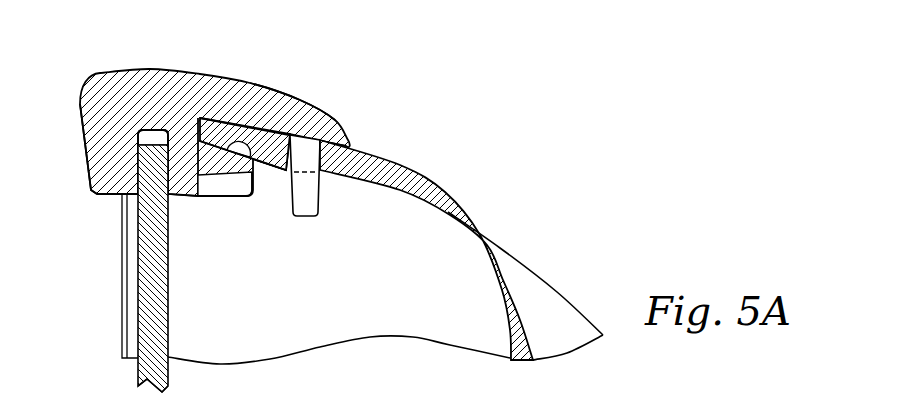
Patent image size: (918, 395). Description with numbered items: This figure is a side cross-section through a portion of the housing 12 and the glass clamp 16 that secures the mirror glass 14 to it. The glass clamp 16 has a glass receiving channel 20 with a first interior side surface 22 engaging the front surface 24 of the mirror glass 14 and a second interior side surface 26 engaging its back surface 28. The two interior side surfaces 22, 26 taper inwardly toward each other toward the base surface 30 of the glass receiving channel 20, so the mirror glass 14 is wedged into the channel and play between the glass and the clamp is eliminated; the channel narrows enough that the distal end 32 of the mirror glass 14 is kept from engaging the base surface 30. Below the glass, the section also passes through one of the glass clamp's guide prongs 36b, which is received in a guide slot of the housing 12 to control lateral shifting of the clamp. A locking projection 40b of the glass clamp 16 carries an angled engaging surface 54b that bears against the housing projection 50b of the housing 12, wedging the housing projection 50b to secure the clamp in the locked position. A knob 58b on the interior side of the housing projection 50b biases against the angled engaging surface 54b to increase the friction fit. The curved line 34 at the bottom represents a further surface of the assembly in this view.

The housing 12 is at (557, 290).
The mirror glass 14 is at (152, 366).
The glass clamp 16 is at (263, 90).
The glass receiving channel 20 is at (155, 137).
The first interior side surface 22 is at (110, 196).
The front surface 24 is at (142, 288).
The second interior side surface 26 is at (176, 194).
The back surface 28 is at (167, 288).
The base surface 30 is at (140, 70).
The distal end 32 is at (171, 133).
The panel 34 is at (339, 365).
The guide prong 36b is at (307, 197).
The locking projection 40b is at (233, 190).
The housing projection 50b is at (283, 119).
The angled engaging surface 54b is at (214, 122).
The knob 58b is at (253, 159).